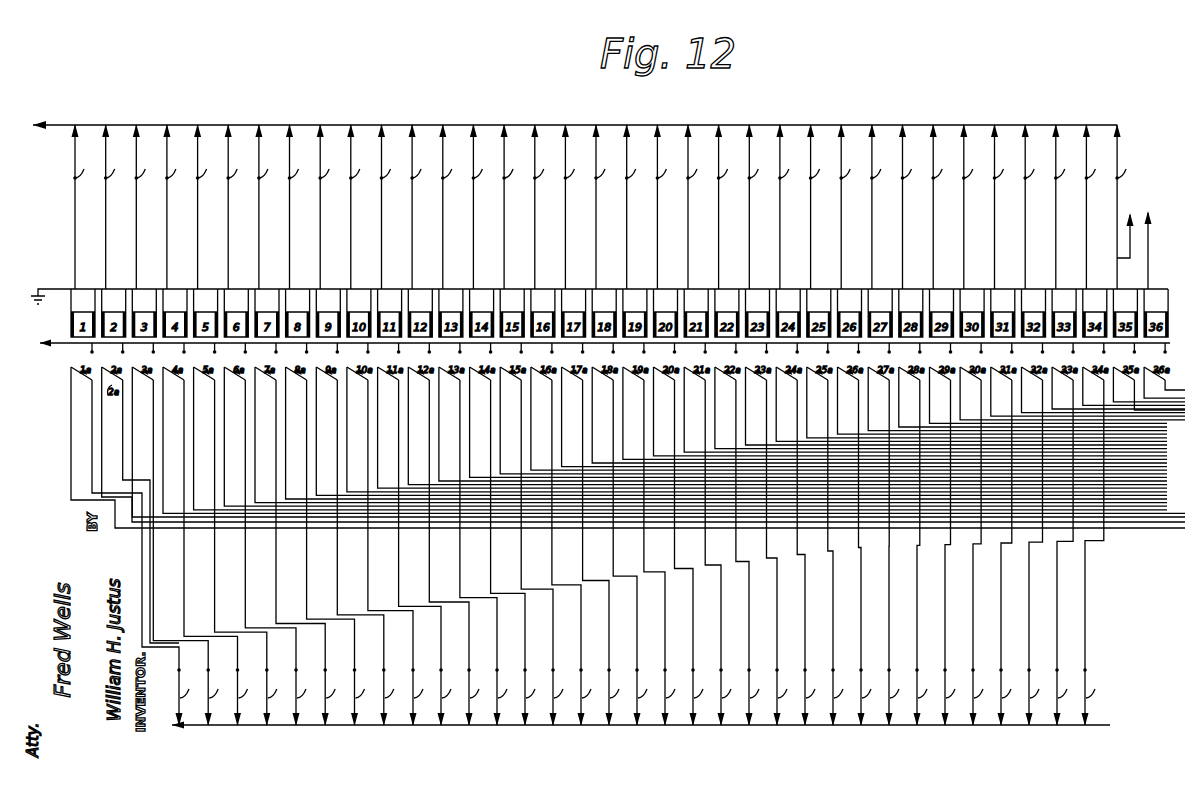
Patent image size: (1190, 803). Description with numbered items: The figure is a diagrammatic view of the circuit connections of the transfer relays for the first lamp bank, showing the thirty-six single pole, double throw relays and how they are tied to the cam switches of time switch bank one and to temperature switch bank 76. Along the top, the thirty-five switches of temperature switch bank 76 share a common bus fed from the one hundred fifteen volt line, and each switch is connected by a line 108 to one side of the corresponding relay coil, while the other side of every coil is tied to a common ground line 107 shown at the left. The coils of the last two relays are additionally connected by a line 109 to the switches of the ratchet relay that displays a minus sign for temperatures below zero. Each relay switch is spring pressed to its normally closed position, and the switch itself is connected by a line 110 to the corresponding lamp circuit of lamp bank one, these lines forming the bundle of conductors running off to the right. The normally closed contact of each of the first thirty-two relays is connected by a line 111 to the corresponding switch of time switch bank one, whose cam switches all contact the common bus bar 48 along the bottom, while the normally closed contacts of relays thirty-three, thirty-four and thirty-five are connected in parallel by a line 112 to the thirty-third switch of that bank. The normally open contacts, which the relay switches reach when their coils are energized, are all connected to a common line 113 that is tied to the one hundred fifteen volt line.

The bus bar 48 is at (653, 730).
The temperature switch bank 1 76 is at (500, 125).
The common ground line 107 is at (47, 287).
The line 108 is at (351, 242).
The line 109 is at (1130, 236).
The line 110 is at (1162, 540).
The line 111 is at (526, 640).
The line 112 is at (1088, 621).
The common line 113 is at (54, 343).